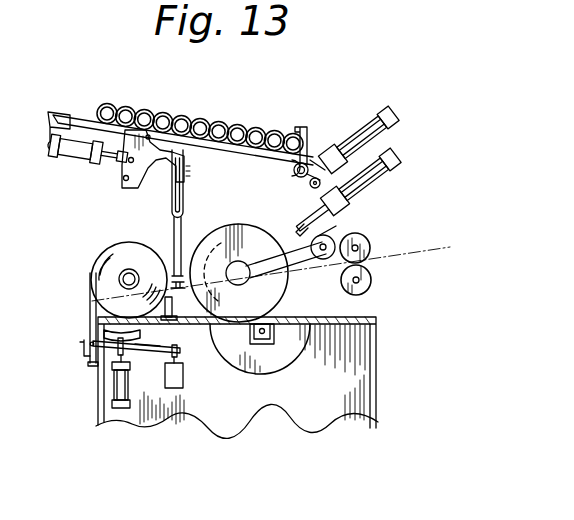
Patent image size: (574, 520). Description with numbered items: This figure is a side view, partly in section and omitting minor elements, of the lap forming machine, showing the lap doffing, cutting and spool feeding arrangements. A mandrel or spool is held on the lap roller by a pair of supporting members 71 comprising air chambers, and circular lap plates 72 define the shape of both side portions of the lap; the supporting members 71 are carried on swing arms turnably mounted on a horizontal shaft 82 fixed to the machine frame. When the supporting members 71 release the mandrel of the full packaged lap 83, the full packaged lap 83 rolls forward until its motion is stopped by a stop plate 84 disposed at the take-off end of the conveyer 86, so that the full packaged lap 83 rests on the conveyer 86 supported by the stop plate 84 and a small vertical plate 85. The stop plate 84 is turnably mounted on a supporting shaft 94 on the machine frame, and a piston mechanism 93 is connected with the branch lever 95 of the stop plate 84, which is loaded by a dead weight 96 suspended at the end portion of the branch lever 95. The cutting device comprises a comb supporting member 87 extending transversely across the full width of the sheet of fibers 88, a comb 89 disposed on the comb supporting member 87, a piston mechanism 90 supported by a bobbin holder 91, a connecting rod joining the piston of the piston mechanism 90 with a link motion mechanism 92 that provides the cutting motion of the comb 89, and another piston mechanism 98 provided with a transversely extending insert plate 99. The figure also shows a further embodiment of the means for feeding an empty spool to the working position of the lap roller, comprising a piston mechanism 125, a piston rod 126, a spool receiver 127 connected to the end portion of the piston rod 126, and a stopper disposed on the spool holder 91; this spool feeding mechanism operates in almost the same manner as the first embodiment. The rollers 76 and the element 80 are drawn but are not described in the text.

The supporting member 71 is at (244, 226).
The circular lap plate 72 is at (197, 243).
The feed rollers 76 is at (371, 243).
The supply roll / articles 80 is at (131, 110).
The horizontal shaft 82 is at (340, 230).
The full packaged lap 83 is at (112, 245).
The stop plate 84 is at (90, 310).
The small vertical plate 85 is at (180, 318).
The conveyer 86 is at (113, 338).
The comb supporting member 87 is at (182, 227).
The sheet of fibers 88 is at (205, 292).
The comb 89 is at (167, 265).
The piston mechanism 90 is at (68, 153).
The bobbin holder 91 is at (73, 124).
The link motion mechanism 92 is at (118, 167).
The piston mechanism 93 is at (113, 387).
The supporting shaft 94 is at (87, 348).
The branch lever 95 is at (148, 352).
The dead weight 96 is at (182, 375).
The piston mechanism 98 is at (367, 185).
The insert plate 99 is at (298, 233).
The piston mechanism 125 is at (360, 117).
The piston rod 126 is at (317, 148).
The spool receiver 127 is at (290, 177).